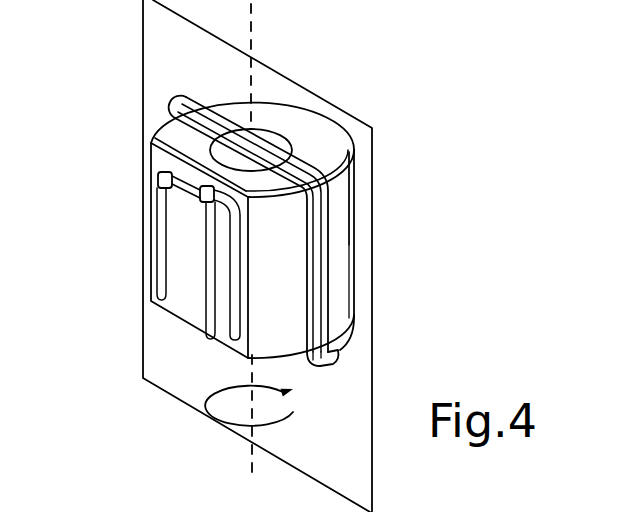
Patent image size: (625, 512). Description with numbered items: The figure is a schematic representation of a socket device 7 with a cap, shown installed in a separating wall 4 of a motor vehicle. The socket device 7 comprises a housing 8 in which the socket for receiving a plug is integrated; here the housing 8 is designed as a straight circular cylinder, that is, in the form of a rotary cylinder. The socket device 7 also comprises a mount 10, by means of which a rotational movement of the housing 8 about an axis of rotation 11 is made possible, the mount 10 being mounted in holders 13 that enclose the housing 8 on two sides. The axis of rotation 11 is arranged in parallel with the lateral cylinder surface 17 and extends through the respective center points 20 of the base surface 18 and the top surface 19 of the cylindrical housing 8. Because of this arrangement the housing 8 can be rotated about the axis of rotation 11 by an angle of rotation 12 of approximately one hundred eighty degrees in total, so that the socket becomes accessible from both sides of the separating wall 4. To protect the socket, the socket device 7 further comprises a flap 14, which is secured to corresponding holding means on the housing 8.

The separating wall 4 is at (358, 170).
The socket device 7 is at (152, 99).
The housing 8 is at (340, 285).
The mount 10 is at (182, 142).
The axis of rotation 11 is at (247, 380).
The angle of rotation 12 is at (293, 412).
The holder 13 is at (335, 358).
The flap 14 is at (190, 285).
The lateral cylinder surface 17 is at (355, 242).
The base surface 18 is at (343, 331).
The top surface 19 is at (328, 143).
The center point 20 is at (253, 152).